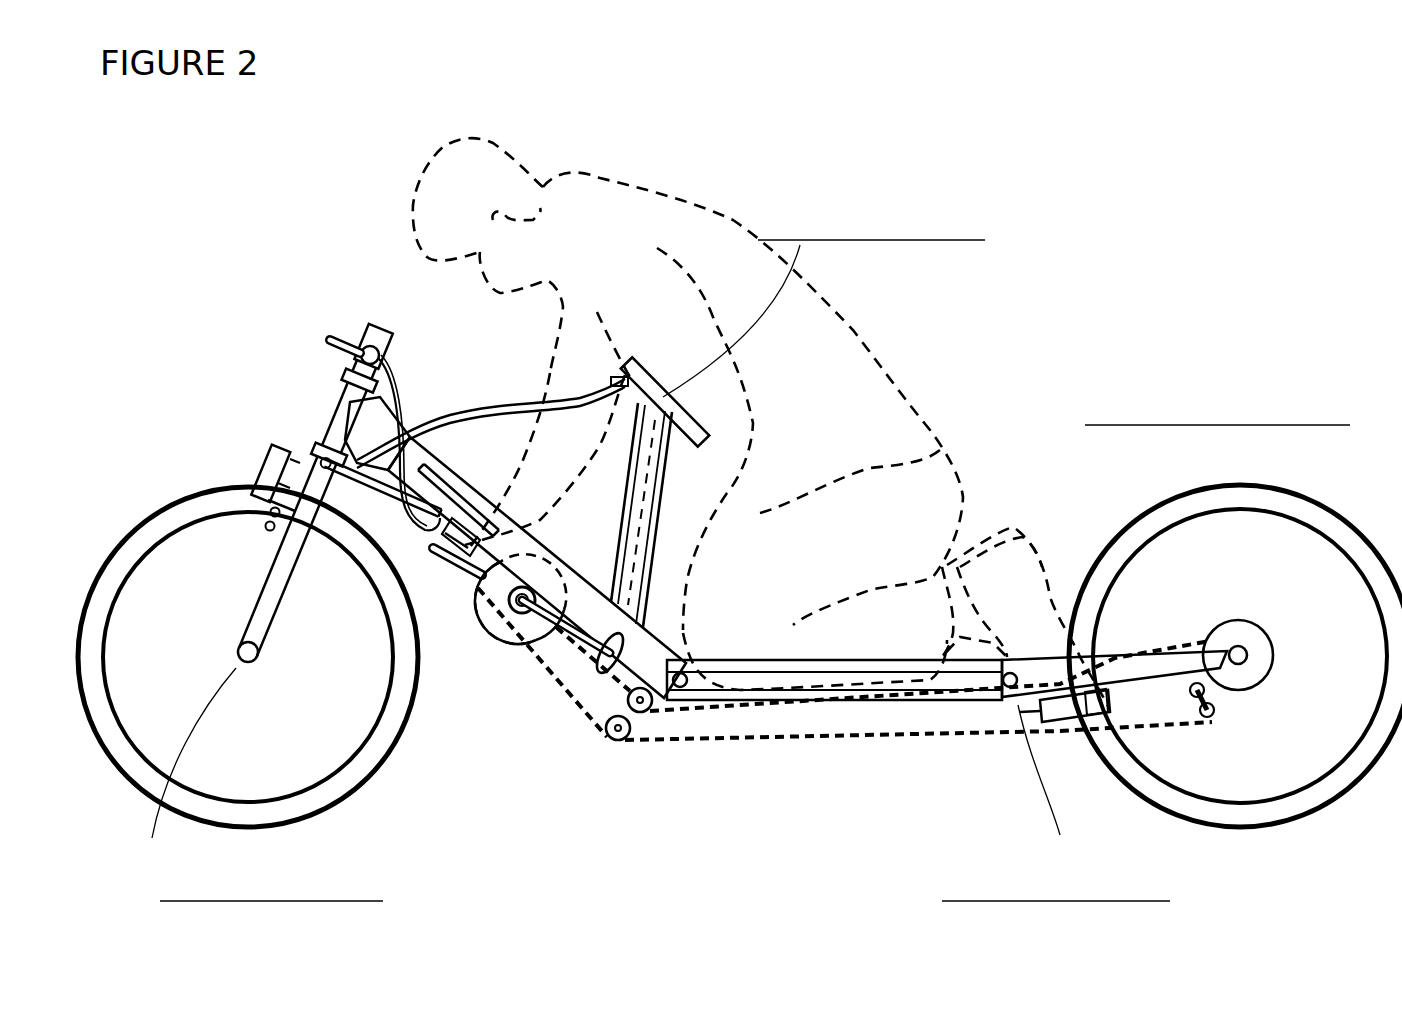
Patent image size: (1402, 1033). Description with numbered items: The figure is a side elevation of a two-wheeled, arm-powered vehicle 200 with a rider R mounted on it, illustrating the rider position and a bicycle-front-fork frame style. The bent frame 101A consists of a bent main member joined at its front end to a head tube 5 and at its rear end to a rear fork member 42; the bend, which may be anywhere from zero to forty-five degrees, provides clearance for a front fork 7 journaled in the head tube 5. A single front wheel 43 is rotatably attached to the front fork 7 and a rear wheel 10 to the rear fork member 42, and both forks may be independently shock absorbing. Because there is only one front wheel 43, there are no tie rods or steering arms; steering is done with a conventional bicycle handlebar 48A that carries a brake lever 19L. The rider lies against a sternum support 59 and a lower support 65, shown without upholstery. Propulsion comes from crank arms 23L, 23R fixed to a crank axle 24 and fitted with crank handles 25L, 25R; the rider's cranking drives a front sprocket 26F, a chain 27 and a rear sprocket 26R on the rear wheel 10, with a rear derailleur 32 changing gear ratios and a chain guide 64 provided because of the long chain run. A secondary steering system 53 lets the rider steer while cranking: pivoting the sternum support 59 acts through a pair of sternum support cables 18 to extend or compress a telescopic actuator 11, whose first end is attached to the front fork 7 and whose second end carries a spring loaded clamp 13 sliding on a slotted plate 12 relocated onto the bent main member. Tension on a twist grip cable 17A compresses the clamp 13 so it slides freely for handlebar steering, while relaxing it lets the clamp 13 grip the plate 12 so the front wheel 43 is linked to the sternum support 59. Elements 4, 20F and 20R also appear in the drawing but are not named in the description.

The vehicle 200 is at (1043, 295).
The rider R is at (803, 390).
The front wheel 43 is at (380, 745).
The front fork 7 is at (252, 622).
The head tube 5 is at (345, 392).
The conventional bicycle handlebar 48A is at (372, 345).
The brake lever 19L is at (352, 340).
The twist grip cable 17A is at (395, 380).
The sternum support cables 18 is at (530, 400).
The front brake 20F is at (285, 475).
The secondary steering system 53 is at (382, 552).
The telescopic actuator 11 is at (358, 613).
The head tube bracket 4 is at (435, 465).
The slotted plate 12 is at (445, 500).
The spring loaded clamp 13 is at (465, 567).
The right crank handle 25R is at (480, 540).
The crank axle 24 is at (530, 592).
The front sprocket 26F is at (562, 650).
The right crank arm 23R is at (507, 620).
The left crank arm 23L is at (505, 645).
The left crank handle 25L is at (580, 672).
The chain guide 64 is at (632, 740).
The chain 27 is at (790, 745).
The lower support 65 is at (937, 695).
The bent frame 101A is at (945, 706).
The rear fork member 42 is at (1118, 662).
The rear shock absorber 20R is at (1085, 715).
The rear wheel 10 is at (1303, 488).
The rear sprocket 26R is at (1260, 672).
The rear derailleur 32 is at (1212, 712).
The sternum support 59 is at (650, 385).